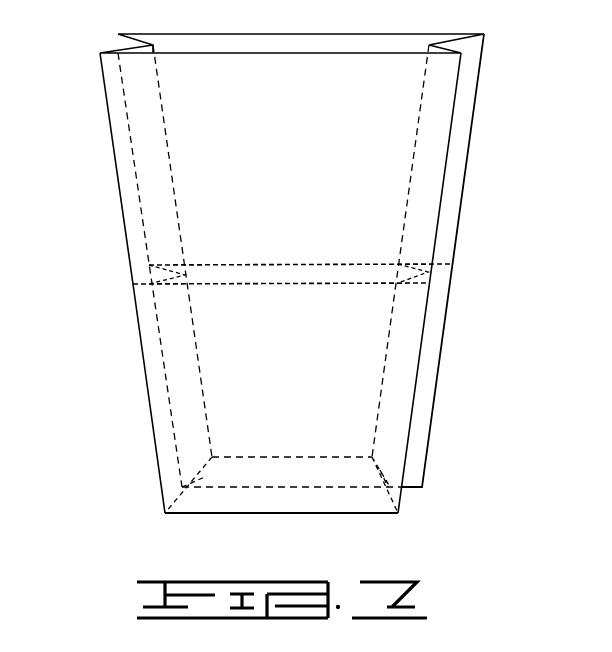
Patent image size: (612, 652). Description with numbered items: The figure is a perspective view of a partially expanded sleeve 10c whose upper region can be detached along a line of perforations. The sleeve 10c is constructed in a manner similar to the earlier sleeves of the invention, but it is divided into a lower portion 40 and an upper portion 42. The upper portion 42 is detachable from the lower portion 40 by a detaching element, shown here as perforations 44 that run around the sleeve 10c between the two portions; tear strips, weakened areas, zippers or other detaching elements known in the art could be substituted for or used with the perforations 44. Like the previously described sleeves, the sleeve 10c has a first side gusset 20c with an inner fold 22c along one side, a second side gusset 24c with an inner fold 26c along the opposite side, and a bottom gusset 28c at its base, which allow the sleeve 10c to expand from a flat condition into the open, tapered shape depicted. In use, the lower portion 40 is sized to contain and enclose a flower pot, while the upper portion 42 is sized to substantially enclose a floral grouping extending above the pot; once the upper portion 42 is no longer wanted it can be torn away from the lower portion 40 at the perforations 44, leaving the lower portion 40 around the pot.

The sleeve 10c is at (310, 267).
The first side gusset 20c is at (117, 43).
The inner fold 22c is at (167, 147).
The second side gusset 24c is at (470, 95).
The inner fold 26c is at (416, 150).
The bottom gusset 28c is at (402, 470).
The lower portion 40 is at (143, 354).
The upper portion 42 is at (122, 218).
The perforations 44 is at (350, 283).